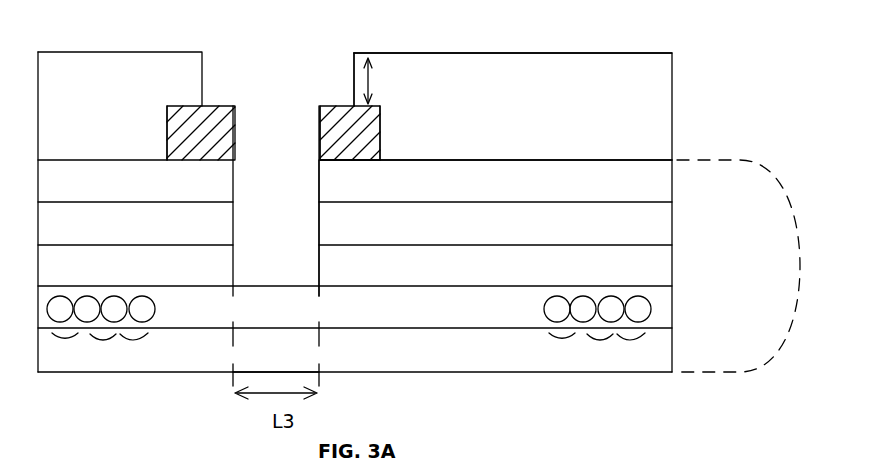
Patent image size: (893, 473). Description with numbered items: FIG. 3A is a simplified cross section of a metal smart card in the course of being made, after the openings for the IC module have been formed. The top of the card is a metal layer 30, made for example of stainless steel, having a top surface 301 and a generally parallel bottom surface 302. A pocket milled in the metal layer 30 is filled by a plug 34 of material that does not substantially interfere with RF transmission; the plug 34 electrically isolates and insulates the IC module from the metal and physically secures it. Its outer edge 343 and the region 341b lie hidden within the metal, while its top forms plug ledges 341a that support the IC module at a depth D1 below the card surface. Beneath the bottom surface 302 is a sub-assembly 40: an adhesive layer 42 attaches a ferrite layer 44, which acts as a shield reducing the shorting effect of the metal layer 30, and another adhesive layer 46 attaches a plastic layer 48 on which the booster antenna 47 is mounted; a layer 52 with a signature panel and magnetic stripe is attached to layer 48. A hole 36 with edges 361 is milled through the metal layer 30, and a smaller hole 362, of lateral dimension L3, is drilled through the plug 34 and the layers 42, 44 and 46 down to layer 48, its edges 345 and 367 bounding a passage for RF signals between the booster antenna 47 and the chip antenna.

The metal layer 30 is at (660, 83).
The top surface 301 is at (628, 53).
The bottom surface 302 is at (660, 160).
The plug 34 is at (382, 150).
The plug ledges 341a is at (231, 105).
The region of plug 341b is at (181, 105).
The outer edge of plug 343 is at (166, 140).
The edge of hole in plug 345 is at (322, 133).
The hole 36 is at (292, 101).
The edge of hole 361 is at (354, 106).
The hole in plug 362 is at (297, 157).
The edge of hole in underlying layers 367 is at (322, 234).
The sub-assembly 40 is at (760, 266).
The adhesive layer 42 is at (660, 181).
The ferrite layer 44 is at (660, 220).
The adhesive layer 46 is at (660, 268).
The booster antenna 47 is at (88, 336).
The plastic layer 48 is at (660, 306).
The signature panel and magnetic stripe layer 52 is at (660, 343).